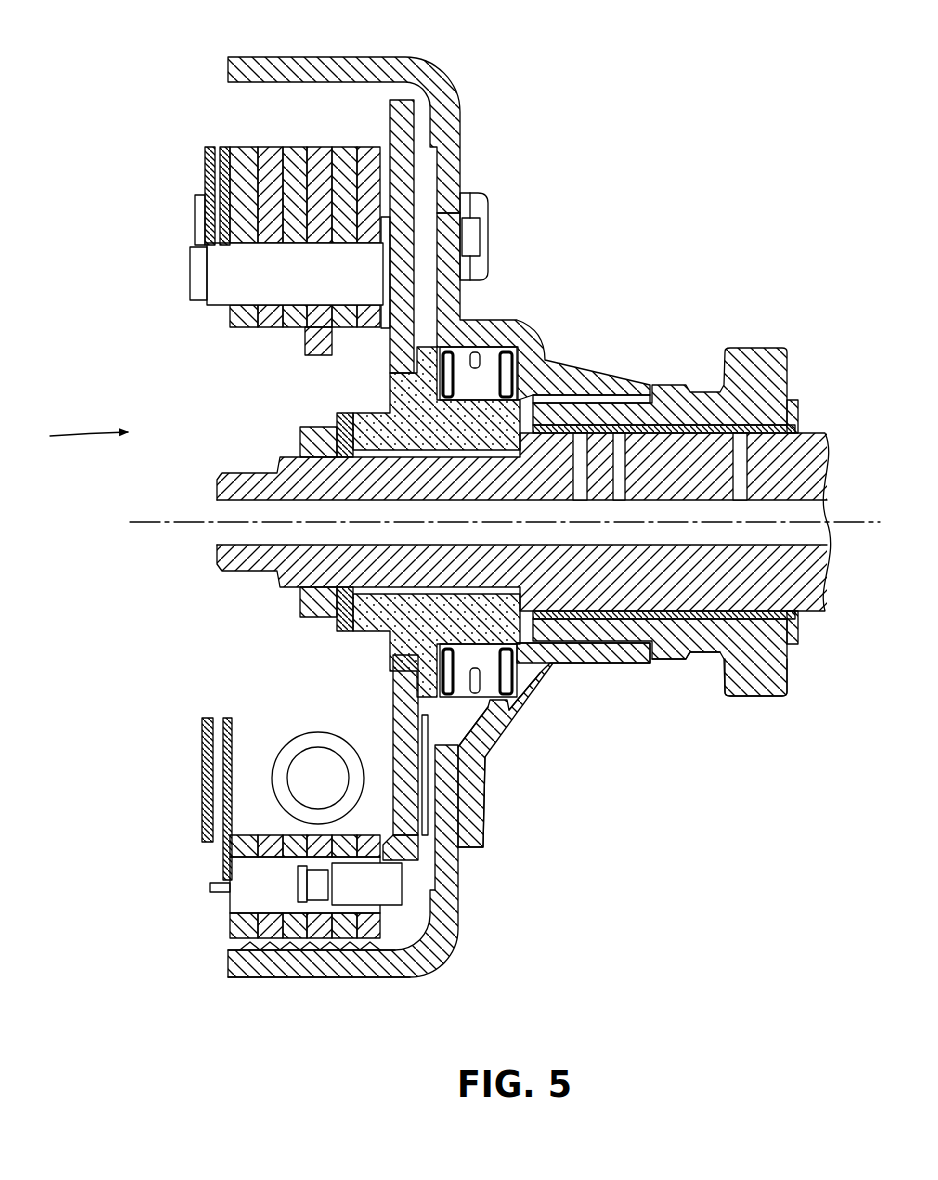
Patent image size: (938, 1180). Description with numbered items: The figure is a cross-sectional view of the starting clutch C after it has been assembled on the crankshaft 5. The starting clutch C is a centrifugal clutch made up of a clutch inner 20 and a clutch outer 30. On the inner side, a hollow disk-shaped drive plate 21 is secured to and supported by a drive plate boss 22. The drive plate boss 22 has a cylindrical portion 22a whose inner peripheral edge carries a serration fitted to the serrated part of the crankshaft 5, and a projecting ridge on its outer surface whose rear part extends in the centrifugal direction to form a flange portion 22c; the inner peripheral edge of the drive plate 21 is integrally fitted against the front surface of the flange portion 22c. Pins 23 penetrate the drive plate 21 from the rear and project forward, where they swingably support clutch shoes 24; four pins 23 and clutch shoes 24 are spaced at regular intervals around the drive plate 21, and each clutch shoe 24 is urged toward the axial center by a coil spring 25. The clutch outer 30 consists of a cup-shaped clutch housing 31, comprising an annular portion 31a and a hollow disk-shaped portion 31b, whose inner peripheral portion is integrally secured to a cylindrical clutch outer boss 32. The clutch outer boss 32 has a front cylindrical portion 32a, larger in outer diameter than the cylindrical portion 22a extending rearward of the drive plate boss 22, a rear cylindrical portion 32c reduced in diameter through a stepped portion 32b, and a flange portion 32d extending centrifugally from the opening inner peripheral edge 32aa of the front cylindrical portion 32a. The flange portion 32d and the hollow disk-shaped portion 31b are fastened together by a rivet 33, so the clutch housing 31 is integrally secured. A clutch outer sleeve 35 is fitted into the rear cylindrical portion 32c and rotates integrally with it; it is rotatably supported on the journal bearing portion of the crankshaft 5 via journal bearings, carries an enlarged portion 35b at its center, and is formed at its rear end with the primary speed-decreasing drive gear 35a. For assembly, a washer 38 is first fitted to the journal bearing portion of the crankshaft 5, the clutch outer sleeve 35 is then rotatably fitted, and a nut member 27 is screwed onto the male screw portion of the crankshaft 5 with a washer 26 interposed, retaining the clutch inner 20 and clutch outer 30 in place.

The crankshaft 5 is at (215, 490).
The clutch inner 20 is at (196, 335).
The drive plate 21 is at (385, 135).
The drive plate boss 22 is at (383, 635).
The cylindrical portion 22a is at (528, 368).
The flange portion 22c is at (415, 730).
The pins 23 is at (220, 278).
The clutch shoe 24 is at (295, 147).
The coil spring 25 is at (490, 360).
The washer 26 is at (347, 418).
The nut member 27 is at (302, 445).
The clutch outer 30 is at (495, 110).
The clutch housing 31 is at (402, 58).
The annular portion 31a is at (326, 977).
The hollow disk-shaped portion 31b is at (462, 870).
The clutch outer boss 32 is at (523, 328).
The front cylindrical portion 32a is at (515, 715).
The opening inner peripheral edge 32aa is at (445, 705).
The stepped portion 32b is at (540, 700).
The rear cylindrical portion 32c is at (605, 665).
The flange portion 32d is at (485, 835).
The rivet 33 is at (488, 234).
The clutch outer sleeve 35 is at (670, 383).
The primary speed-decreasing drive gear 35a is at (752, 696).
The enlarged portion 35b is at (668, 665).
The washer 38 is at (800, 398).
The starting clutch C is at (75, 433).